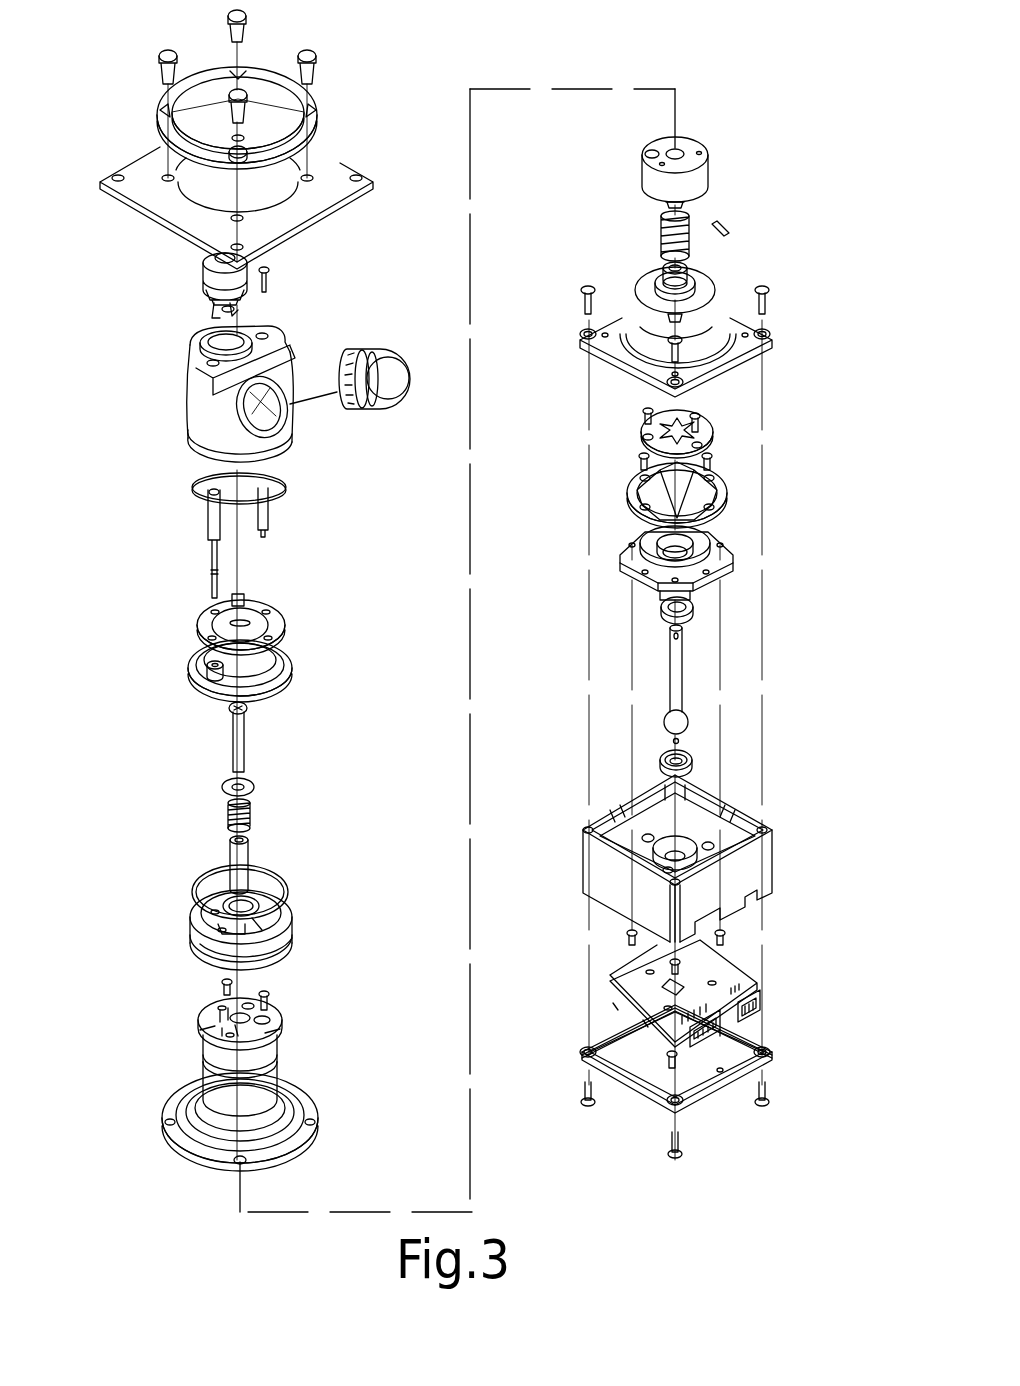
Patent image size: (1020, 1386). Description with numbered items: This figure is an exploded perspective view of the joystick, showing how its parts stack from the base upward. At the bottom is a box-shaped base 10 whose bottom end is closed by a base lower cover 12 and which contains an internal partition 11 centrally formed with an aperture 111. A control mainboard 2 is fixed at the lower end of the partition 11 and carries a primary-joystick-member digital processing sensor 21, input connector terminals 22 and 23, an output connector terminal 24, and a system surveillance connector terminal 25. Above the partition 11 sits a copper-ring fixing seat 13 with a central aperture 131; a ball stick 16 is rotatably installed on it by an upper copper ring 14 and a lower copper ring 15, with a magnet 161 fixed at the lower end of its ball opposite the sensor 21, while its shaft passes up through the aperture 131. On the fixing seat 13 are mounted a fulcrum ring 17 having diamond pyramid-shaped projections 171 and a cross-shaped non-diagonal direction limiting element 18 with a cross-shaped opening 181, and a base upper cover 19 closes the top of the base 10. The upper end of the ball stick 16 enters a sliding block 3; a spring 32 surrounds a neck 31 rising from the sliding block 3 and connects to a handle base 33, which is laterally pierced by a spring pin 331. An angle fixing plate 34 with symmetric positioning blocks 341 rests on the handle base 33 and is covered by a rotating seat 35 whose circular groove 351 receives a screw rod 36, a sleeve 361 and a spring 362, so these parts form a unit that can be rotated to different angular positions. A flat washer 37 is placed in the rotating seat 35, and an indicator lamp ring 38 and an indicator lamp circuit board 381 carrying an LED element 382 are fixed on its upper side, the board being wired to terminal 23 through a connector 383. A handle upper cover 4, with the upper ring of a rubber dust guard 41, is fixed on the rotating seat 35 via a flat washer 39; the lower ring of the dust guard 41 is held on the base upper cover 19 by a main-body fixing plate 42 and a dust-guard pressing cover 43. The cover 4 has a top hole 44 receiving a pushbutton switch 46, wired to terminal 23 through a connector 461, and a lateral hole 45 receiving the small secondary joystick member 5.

The control mainboard 2 is at (728, 966).
The sliding block 3 is at (702, 290).
The handle upper cover 4 is at (241, 399).
The small secondary joystick member 5 is at (388, 372).
The box-shaped base 10 is at (592, 862).
The internal partition 11 is at (722, 850).
The base lower cover 12 is at (642, 1068).
The copper-ring fixing seat 13 is at (640, 538).
The upper copper ring 14 is at (690, 616).
The lower copper ring 15 is at (690, 756).
The ball stick 16 is at (672, 692).
The fulcrum ring 17 is at (640, 483).
The cross-shaped non-diagonal direction limiting element 18 is at (642, 428).
The base upper cover 19 is at (616, 320).
The primary-joystick-member digital processing sensor 21 is at (672, 986).
The input connector terminal 22 is at (742, 990).
The input connector terminal 23 is at (700, 1012).
The output connector terminal 24 is at (700, 1048).
The system surveillance connector terminal 25 is at (760, 1018).
The neck 31 is at (668, 276).
The spring 32 is at (664, 242).
The handle base 33 is at (706, 162).
The angle fixing plate 34 is at (267, 1006).
The rotating seat 35 is at (274, 926).
The screw rod 36 is at (246, 754).
The flat washer 37 is at (202, 884).
The indicator lamp ring 38 is at (202, 657).
The flat washer 39 is at (196, 470).
The rubber dust guard 41 is at (184, 1096).
The main-body fixing plate 42 is at (132, 165).
The dust-guard pressing cover 43 is at (162, 102).
The hole 44 is at (202, 336).
The hole 45 is at (270, 392).
The pushbutton switch 46 is at (205, 268).
The aperture 111 is at (652, 840).
The aperture 131 is at (698, 546).
The magnet 161 is at (672, 741).
The diamond pyramid-shaped projections 171 is at (705, 490).
The cross-shaped opening 181 is at (692, 438).
The spring pin 331 is at (728, 232).
The symmetric positioning blocks 341 is at (278, 1026).
The circular groove 351 is at (212, 944).
The sleeve 361 is at (250, 860).
The spring 362 is at (252, 812).
The indicator lamp circuit board 381 is at (202, 620).
The LED element 382 is at (260, 620).
The connector 383 is at (241, 598).
The connector 461 is at (238, 312).